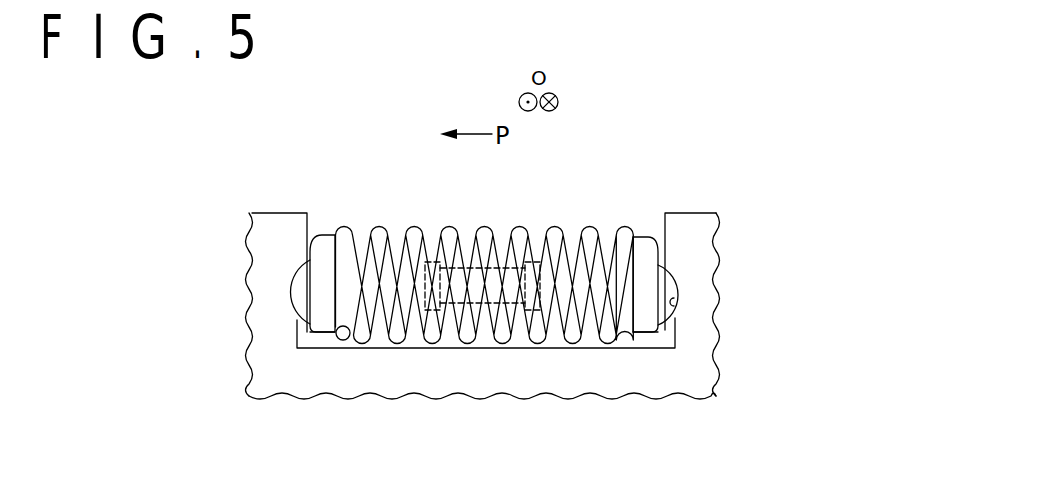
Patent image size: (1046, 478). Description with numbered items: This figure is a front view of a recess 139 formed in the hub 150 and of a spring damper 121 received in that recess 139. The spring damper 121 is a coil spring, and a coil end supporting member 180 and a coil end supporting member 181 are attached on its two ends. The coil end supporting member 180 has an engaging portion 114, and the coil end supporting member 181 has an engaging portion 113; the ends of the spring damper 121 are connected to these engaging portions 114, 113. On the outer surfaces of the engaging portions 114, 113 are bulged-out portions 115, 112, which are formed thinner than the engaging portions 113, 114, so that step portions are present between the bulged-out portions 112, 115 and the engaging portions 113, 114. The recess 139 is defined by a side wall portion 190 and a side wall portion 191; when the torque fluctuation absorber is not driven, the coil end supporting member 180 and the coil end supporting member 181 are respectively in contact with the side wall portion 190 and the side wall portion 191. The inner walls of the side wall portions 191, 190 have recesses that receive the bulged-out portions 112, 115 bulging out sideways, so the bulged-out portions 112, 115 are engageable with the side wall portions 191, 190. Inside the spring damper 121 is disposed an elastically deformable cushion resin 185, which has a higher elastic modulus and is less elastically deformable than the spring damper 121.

The hub 150 is at (477, 236).
The spring damper 121 is at (554, 236).
The cushion resin 185 is at (433, 262).
The coil end supporting member 180 is at (647, 248).
The coil end supporting member 181 is at (322, 245).
The side wall portion 190 is at (680, 236).
The side wall portion 191 is at (282, 240).
The bulged-out portion 112 is at (296, 324).
The engaging portion 113 is at (322, 318).
The engaging portion 114 is at (645, 320).
The bulged-out portion 115 is at (665, 324).
The recess 139 is at (674, 298).